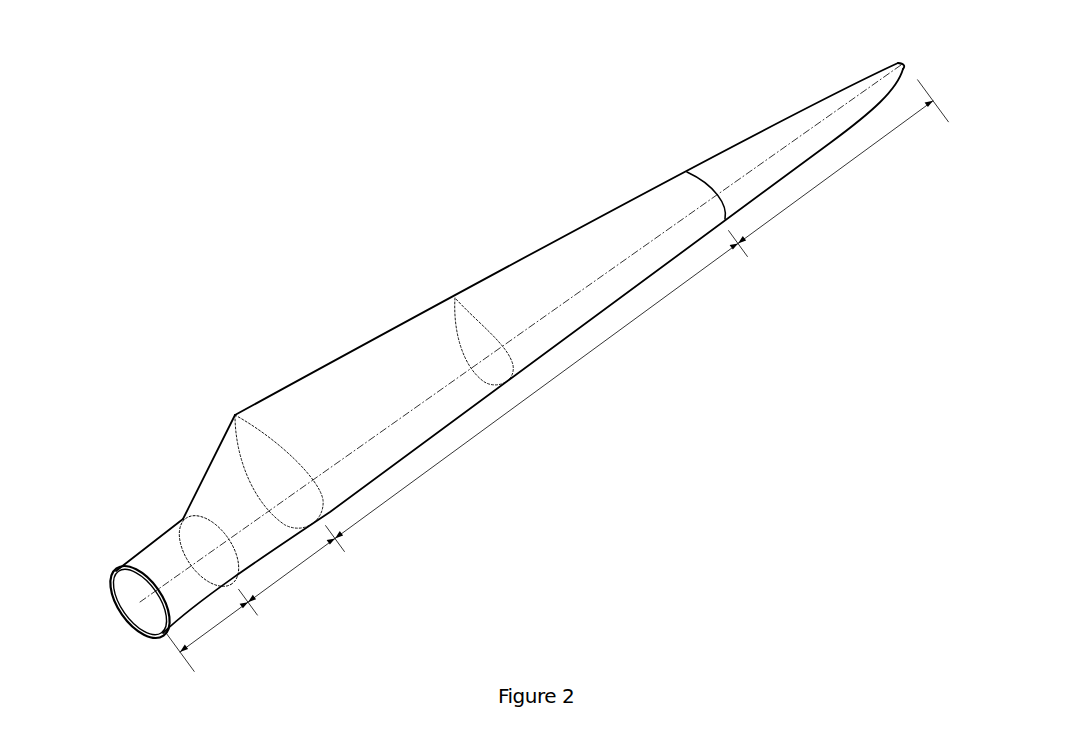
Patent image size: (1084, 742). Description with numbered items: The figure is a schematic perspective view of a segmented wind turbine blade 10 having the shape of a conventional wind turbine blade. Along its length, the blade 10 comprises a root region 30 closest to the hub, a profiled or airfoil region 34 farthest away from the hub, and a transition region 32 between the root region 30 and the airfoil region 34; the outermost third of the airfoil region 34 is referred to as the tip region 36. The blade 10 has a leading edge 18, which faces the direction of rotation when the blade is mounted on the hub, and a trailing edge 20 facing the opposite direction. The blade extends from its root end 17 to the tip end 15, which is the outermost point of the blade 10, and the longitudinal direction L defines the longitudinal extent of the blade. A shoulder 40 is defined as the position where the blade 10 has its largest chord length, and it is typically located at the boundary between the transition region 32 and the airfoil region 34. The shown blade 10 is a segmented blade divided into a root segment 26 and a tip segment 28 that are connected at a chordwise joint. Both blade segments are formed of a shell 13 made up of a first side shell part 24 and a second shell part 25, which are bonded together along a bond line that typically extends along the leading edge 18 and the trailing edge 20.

The wind turbine blade 10 is at (364, 218).
The shell 13 is at (205, 473).
The tip end 15 is at (900, 62).
The root end 17 is at (121, 587).
The leading edge 18 is at (632, 290).
The trailing edge 20 is at (573, 232).
The first shell part 24 is at (142, 566).
The second shell part 25 is at (150, 616).
The root segment 26 is at (490, 317).
The tip segment 28 is at (760, 165).
The root region 30 is at (215, 627).
The transition region 32 is at (298, 568).
The airfoil region 34 is at (497, 422).
The tip region 36 is at (793, 203).
The shoulder 40 is at (235, 413).
The longitudinal direction L is at (148, 605).